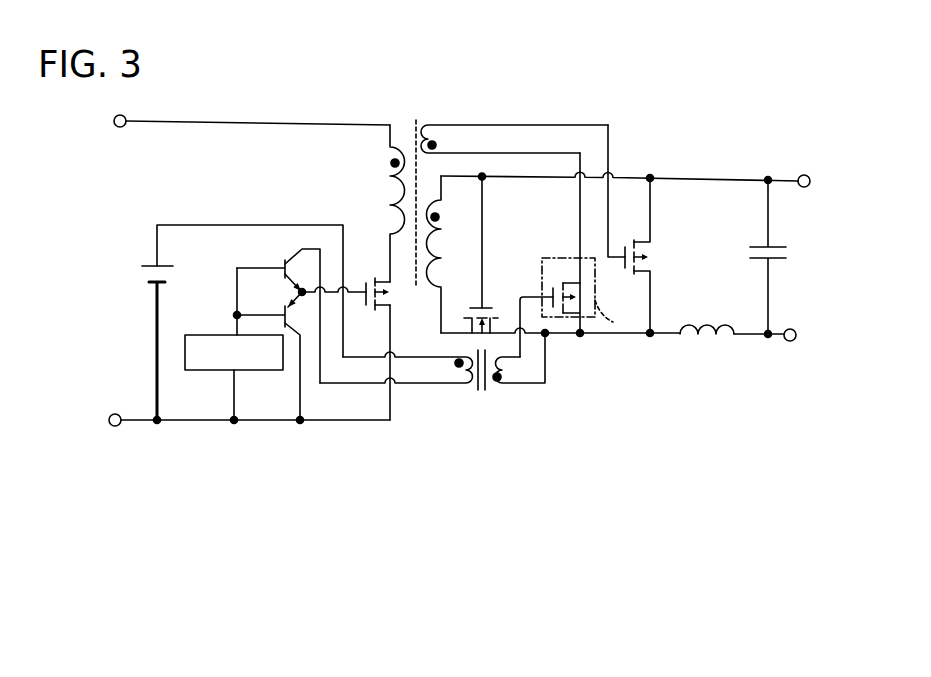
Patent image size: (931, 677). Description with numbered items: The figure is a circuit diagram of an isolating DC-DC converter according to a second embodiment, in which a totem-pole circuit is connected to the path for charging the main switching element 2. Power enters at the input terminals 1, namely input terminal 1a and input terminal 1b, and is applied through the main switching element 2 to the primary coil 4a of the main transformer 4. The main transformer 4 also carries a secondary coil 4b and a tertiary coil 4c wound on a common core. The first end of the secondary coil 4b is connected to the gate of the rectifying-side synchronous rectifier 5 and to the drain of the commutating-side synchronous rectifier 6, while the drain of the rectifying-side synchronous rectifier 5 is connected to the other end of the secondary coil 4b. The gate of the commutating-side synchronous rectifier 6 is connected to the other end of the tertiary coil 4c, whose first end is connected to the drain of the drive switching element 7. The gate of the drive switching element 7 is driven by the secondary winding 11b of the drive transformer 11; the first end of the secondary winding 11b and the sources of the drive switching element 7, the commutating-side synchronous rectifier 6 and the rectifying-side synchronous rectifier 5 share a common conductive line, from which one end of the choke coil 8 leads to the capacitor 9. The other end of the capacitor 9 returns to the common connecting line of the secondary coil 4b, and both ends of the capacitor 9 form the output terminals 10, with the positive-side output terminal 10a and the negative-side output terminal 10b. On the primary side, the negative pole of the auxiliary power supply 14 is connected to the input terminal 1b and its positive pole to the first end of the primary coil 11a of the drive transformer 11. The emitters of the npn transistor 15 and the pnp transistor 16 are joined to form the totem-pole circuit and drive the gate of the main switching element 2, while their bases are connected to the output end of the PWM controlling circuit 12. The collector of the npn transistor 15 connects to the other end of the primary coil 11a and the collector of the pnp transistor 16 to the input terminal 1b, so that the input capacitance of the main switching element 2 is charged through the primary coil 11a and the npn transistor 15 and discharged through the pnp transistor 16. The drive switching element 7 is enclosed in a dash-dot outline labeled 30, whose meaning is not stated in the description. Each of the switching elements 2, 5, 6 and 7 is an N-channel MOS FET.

The input terminals 1 is at (241, 270).
The input terminal 1a is at (241, 134).
The input terminal 1b is at (241, 406).
The main switching element 2 is at (354, 349).
The main transformer 4 is at (498, 213).
The primary coil 4a is at (388, 203).
The secondary coil 4b is at (441, 254).
The tertiary coil 4c is at (523, 204).
The rectifying-side synchronous rectifier 5 is at (481, 254).
The commutating-side synchronous rectifier 6 is at (644, 255).
The drive switching element 7 is at (557, 307).
The choke coil 8 is at (707, 319).
The capacitor 9 is at (765, 257).
The output terminals 10 is at (645, 262).
The (+) side output terminal 10a is at (645, 168).
The (−) side output terminal 10b is at (642, 351).
The drive transformer 11 is at (432, 373).
The primary coil 11a is at (396, 367).
The secondary winding 11b is at (519, 358).
The PWM controlling circuit 12 is at (210, 333).
The auxiliary power supply 14 is at (234, 322).
The npn transistor 15 is at (278, 312).
The pnp transistor 16 is at (268, 356).
The switching element 30 is at (617, 316).